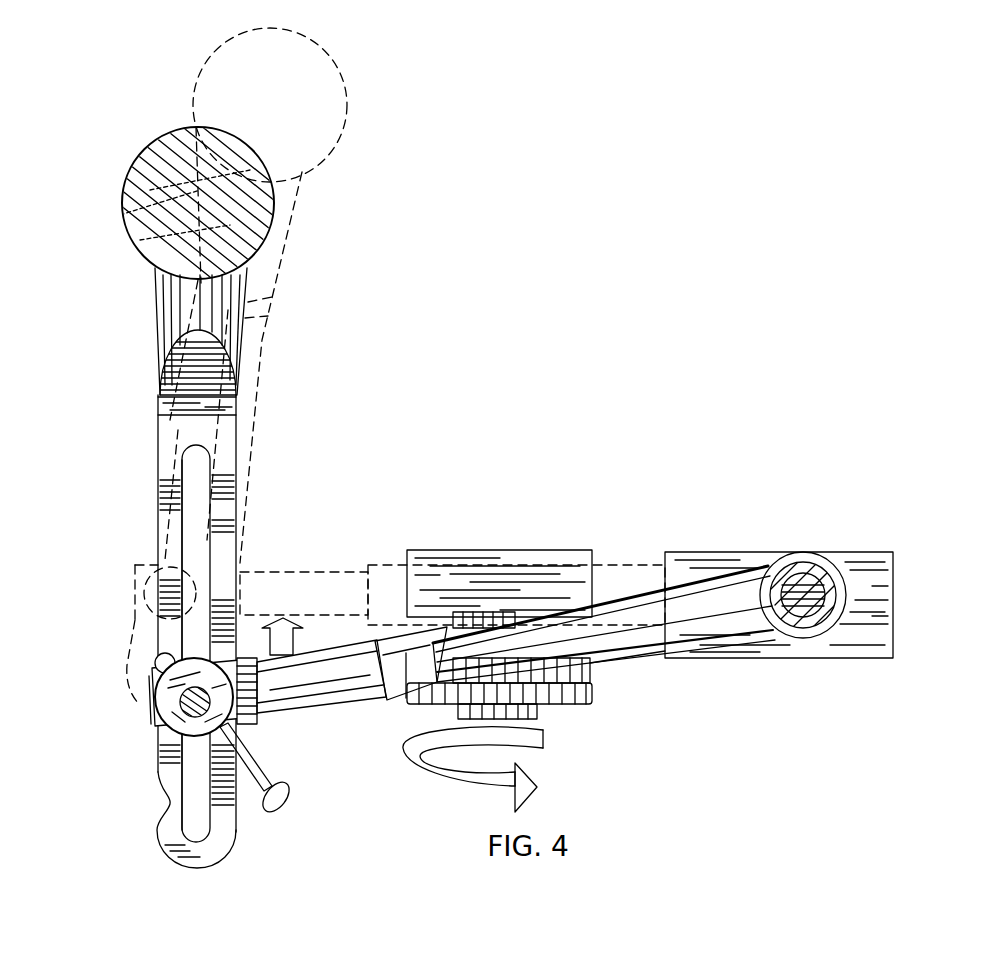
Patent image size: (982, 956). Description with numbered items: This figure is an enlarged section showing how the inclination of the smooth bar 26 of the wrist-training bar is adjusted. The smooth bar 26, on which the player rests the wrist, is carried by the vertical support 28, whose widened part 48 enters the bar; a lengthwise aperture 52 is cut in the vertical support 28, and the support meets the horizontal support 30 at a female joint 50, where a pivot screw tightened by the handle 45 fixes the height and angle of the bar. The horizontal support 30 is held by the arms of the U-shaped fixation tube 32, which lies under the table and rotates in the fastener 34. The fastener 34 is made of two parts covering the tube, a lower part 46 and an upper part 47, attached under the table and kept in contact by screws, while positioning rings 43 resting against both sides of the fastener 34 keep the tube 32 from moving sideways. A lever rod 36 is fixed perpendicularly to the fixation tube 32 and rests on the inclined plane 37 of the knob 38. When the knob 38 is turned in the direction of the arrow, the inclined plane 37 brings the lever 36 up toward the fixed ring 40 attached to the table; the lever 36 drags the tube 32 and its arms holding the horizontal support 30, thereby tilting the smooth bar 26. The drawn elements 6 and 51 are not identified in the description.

The boss / pivot nut 6 is at (167, 737).
The smooth bar 26 is at (162, 150).
The vertical support 28 is at (163, 433).
The horizontal support 30 is at (302, 668).
The fixation tube 32 is at (620, 600).
The fastener 34 is at (717, 558).
The lever rod 36 is at (633, 663).
The inclined plane 37 is at (444, 630).
The knob 38 is at (558, 698).
The fixed ring 40 is at (512, 565).
The positioning ring 43 is at (803, 555).
The handle 45 is at (292, 795).
The lower part 46 is at (880, 613).
The upper part 47 is at (877, 582).
The widened part 48 is at (162, 312).
The female joint 50 is at (160, 712).
The slot 51 is at (165, 493).
The aperture 52 is at (190, 512).